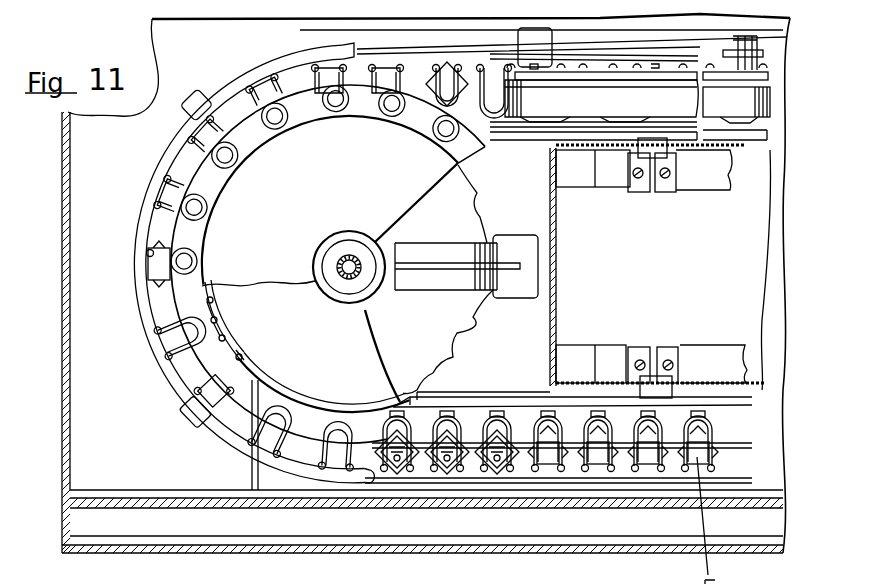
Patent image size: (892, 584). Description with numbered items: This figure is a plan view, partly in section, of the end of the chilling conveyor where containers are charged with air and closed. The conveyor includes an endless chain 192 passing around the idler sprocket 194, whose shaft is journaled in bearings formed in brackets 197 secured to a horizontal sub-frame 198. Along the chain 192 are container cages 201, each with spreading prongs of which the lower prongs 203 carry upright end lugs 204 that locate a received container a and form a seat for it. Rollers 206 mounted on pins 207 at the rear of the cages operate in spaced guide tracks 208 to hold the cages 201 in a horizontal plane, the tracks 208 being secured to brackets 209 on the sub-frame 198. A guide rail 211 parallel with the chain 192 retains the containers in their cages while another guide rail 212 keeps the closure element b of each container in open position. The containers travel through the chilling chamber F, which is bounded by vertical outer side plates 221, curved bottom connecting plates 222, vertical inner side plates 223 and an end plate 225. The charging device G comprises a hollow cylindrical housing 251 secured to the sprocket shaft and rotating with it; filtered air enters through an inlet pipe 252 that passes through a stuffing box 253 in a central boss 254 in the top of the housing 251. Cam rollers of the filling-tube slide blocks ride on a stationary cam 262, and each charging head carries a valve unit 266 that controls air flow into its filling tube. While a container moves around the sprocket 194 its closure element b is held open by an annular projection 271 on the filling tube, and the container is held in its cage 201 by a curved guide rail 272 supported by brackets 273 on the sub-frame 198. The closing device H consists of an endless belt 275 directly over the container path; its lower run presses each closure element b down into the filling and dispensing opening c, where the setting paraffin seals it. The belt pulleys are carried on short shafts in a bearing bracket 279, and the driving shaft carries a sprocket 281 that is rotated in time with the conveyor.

The endless chain 192 is at (218, 297).
The sprocket 194 is at (448, 328).
The bracket 197 is at (425, 252).
The sub-frame 198 is at (527, 317).
The container cage 201 is at (225, 335).
The lower prong 203 is at (240, 97).
The end lug 204 is at (257, 92).
The roller 206 is at (217, 310).
The pin 207 is at (217, 317).
The guide track 208 is at (728, 133).
The bracket 209 is at (662, 186).
The guide rail 211 is at (368, 52).
The guide rail 212 is at (725, 443).
The outer side plate 221 is at (595, 188).
The bottom connecting plate 222 is at (728, 242).
The inner side plate 223 is at (562, 378).
The end plate 225 is at (556, 272).
The cylindrical housing 251 is at (328, 264).
The inlet pipe 252 is at (355, 260).
The stuffing box 253 is at (341, 250).
The boss 254 is at (330, 243).
The stationary cam 262 is at (350, 356).
The valve unit 266 is at (200, 260).
The annular projection 271 is at (437, 135).
The curved guide rail 272 is at (173, 400).
The bracket 273 is at (192, 418).
The endless belt 275 is at (637, 93).
The bearing bracket 279 is at (540, 42).
The sprocket 281 is at (752, 42).
The container a is at (158, 318).
The closure element b is at (390, 453).
The filling and dispensing opening c is at (392, 440).
The chilling chamber F is at (92, 437).
The charging device G is at (279, 193).
The closing device H is at (577, 100).